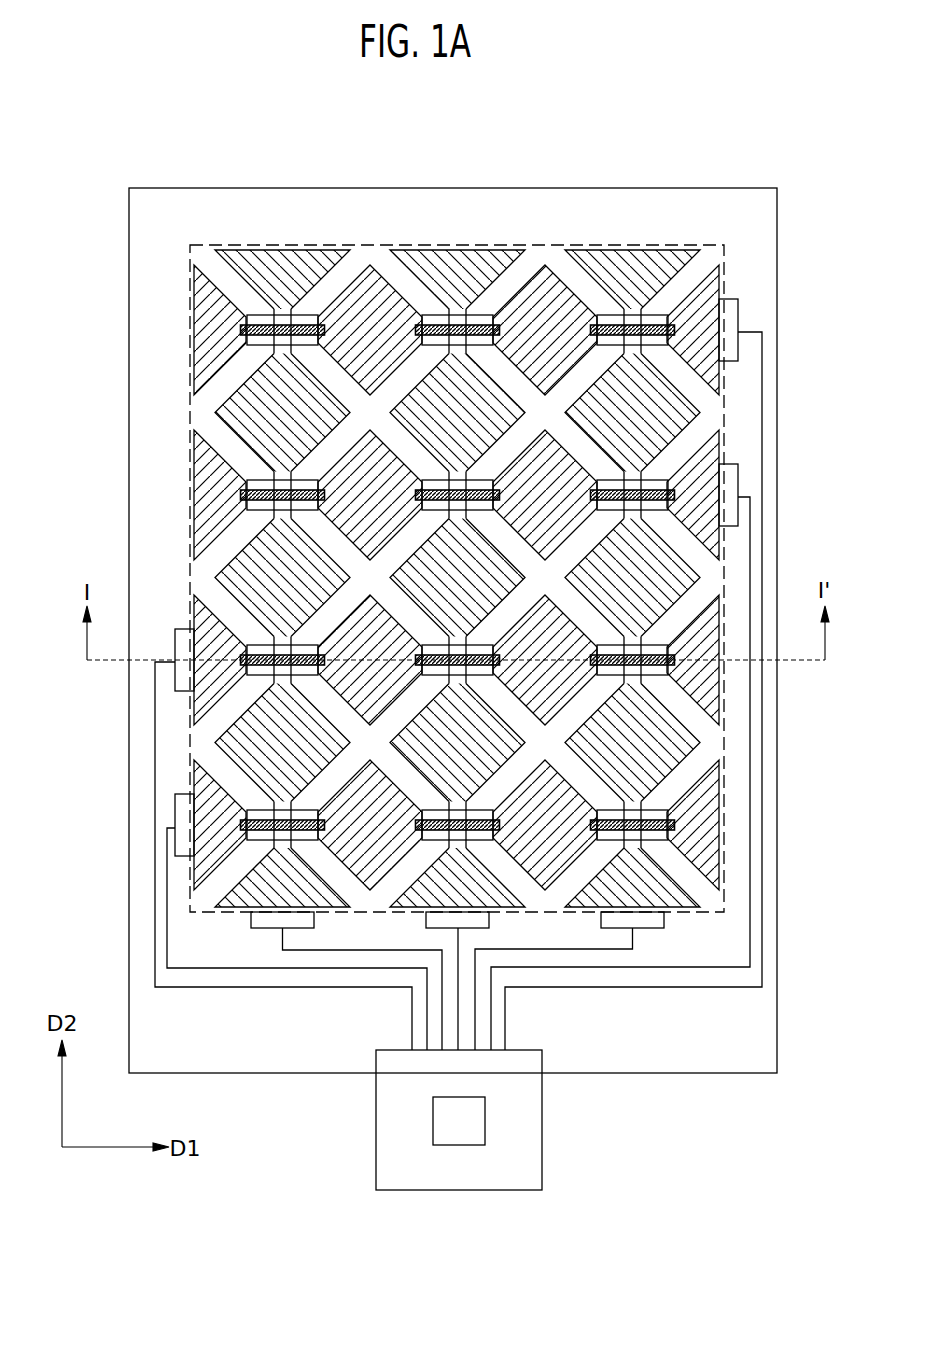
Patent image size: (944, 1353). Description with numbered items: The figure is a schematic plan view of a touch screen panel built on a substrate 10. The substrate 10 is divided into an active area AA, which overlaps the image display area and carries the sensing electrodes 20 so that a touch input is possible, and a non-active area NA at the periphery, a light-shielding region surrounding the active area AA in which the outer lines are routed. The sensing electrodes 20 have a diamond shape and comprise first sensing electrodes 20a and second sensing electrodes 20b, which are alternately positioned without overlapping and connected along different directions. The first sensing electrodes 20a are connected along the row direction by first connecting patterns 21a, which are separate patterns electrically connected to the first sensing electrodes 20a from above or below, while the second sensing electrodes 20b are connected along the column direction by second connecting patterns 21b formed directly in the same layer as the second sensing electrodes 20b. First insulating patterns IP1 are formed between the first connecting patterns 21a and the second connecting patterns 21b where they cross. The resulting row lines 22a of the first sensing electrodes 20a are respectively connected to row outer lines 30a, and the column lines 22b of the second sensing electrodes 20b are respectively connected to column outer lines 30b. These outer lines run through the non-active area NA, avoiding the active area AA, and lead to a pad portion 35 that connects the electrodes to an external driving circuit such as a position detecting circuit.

The substrate 10 is at (463, 188).
The sensing electrodes 20 is at (310, 139).
The first sensing electrodes 20a is at (200, 293).
The second sensing electrodes 20b is at (268, 266).
The first connecting patterns 21a is at (240, 330).
The second connecting patterns 21b is at (250, 355).
The first insulating patterns IP1 is at (247, 343).
The row lines 22a is at (748, 280).
The column lines 22b is at (605, 236).
The row outer lines 30a is at (153, 823).
The column outer lines 30b is at (635, 940).
The pad portion 35 is at (542, 1115).
The active area AA is at (725, 252).
The non-active area NA is at (767, 310).